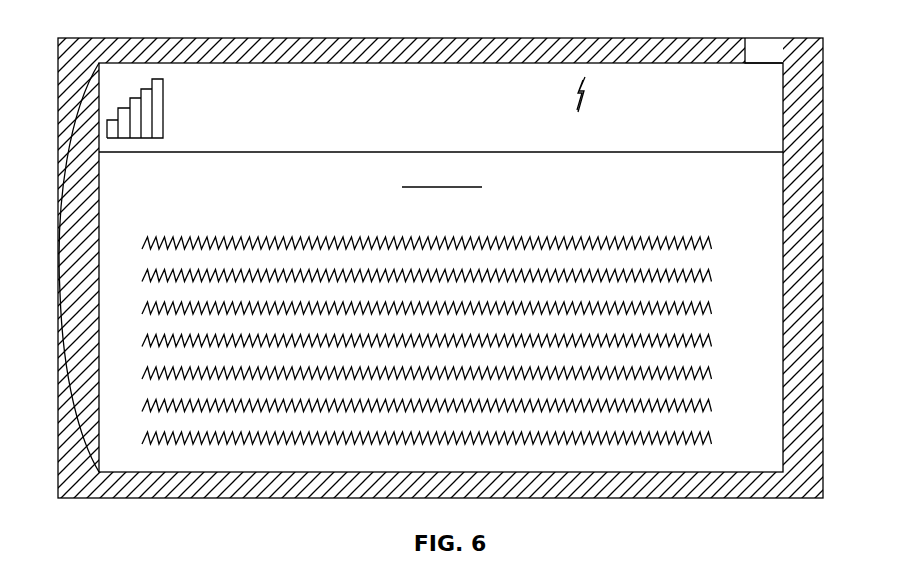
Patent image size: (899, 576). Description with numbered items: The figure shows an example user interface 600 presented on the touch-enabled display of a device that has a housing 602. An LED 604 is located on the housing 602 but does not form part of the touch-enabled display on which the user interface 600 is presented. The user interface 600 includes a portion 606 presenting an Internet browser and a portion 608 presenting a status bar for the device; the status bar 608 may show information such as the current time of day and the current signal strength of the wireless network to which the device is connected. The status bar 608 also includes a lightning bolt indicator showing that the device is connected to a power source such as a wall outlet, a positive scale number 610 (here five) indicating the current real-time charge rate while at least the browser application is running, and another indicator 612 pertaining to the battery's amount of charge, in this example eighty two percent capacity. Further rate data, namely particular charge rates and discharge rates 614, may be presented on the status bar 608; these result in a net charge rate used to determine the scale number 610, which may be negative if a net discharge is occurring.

The user interface 600 is at (61, 280).
The housing 602 is at (823, 207).
The LED 604 is at (753, 38).
The portion presenting an Internet browser 606 is at (760, 312).
The status bar 608 is at (203, 117).
The positive scale number 610 is at (612, 82).
The indicator 612 is at (732, 106).
The charge rates and discharge rates 614 is at (436, 132).